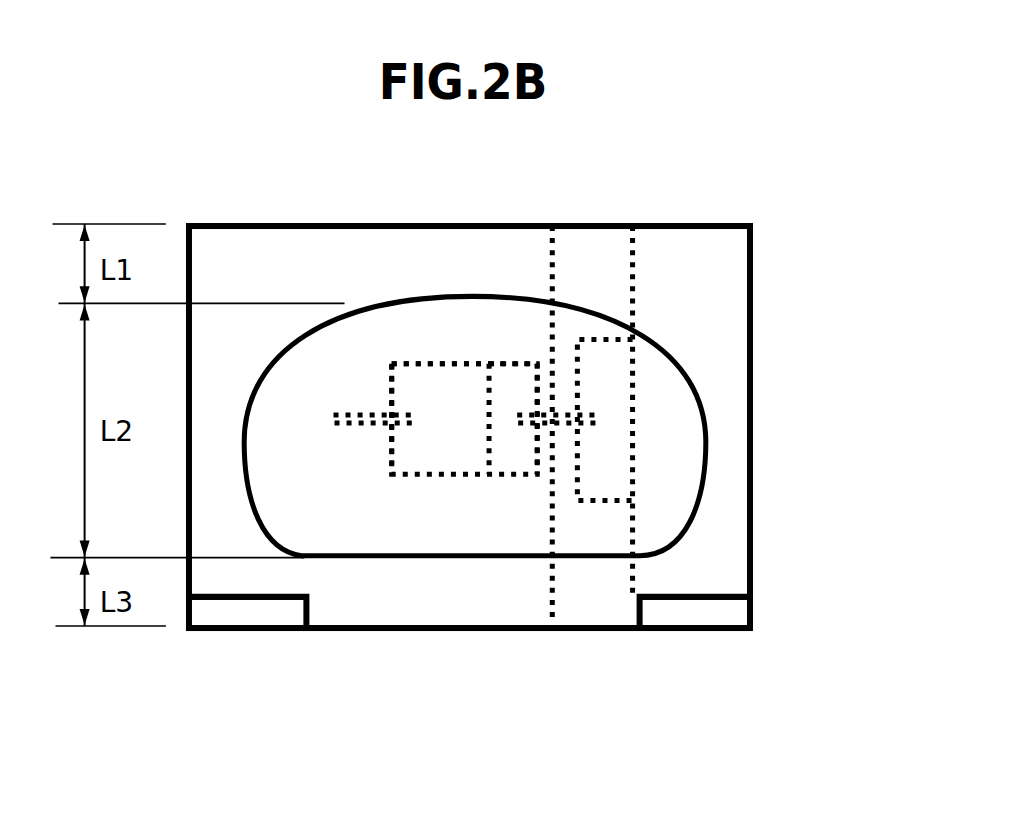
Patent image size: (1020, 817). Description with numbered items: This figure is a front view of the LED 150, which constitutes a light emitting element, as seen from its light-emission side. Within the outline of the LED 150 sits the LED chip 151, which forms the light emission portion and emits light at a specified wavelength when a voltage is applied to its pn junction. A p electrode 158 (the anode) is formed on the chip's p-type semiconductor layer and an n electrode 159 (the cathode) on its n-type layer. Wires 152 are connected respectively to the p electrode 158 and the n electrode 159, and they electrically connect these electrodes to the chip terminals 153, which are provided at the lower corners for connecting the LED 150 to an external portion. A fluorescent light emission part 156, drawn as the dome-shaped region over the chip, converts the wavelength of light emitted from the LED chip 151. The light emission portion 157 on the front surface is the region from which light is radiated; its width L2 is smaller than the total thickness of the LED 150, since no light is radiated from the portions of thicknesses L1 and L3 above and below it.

The LED 150 is at (470, 642).
The LED chip 151 is at (487, 365).
The wires 152 is at (567, 405).
The chip terminals 153 is at (283, 607).
The fluorescent light emission part 156 is at (352, 338).
The light emission portion 157 is at (627, 440).
The p electrode 158 is at (520, 375).
The n electrode 159 is at (408, 390).